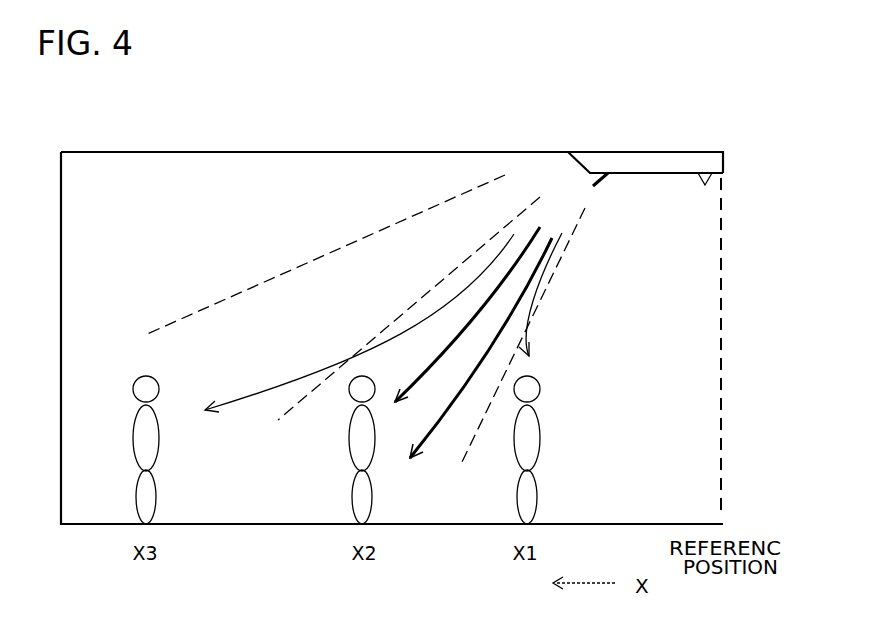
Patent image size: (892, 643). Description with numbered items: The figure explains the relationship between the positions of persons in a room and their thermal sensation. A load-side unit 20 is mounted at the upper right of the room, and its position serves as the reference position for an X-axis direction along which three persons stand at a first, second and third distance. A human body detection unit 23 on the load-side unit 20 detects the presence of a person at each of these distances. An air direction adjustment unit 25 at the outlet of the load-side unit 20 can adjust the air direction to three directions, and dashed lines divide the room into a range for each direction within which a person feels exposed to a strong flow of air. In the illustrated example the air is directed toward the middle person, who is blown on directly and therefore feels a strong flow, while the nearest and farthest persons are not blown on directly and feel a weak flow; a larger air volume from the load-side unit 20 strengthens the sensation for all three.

The load-side unit 20 is at (616, 152).
The human body detection unit 23 is at (705, 185).
The air direction adjustment unit 25 is at (598, 188).